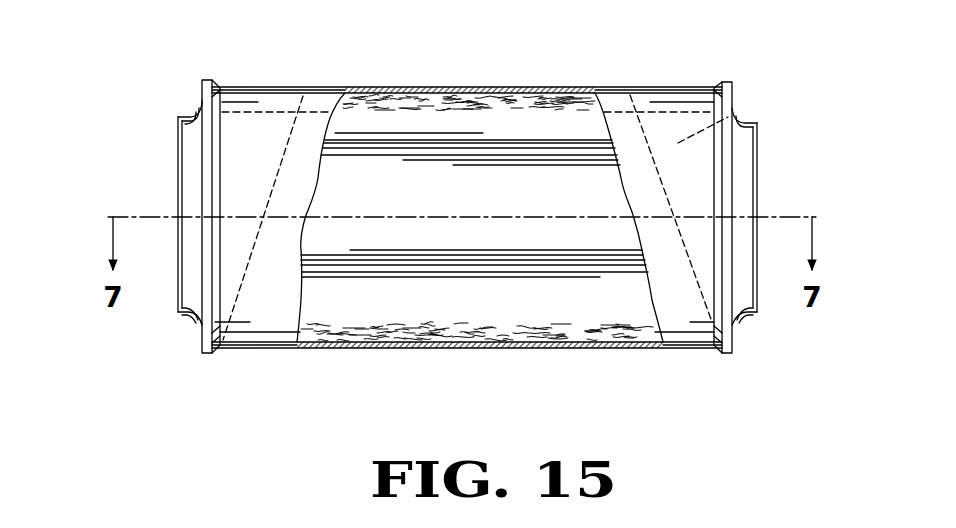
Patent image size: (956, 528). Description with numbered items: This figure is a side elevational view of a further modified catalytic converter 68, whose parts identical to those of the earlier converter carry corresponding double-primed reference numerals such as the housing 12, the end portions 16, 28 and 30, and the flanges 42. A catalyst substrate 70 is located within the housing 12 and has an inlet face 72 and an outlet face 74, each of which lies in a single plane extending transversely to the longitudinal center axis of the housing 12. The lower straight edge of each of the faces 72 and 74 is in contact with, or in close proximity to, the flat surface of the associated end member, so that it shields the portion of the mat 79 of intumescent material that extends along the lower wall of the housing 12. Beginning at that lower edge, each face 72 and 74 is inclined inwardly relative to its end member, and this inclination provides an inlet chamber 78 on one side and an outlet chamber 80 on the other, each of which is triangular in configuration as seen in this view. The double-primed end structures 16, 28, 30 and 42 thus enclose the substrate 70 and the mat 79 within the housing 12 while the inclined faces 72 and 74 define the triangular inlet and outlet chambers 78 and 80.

The housing 12 is at (295, 75).
The inlet end collar 16 is at (190, 217).
The inlet end lip 28 is at (198, 325).
The outlet end lip 30 is at (742, 322).
The flange 42 is at (218, 78).
The catalytic converter 68 is at (508, 74).
The catalyst substrate 70 is at (496, 207).
The inlet face 72 is at (278, 171).
The outlet face 74 is at (668, 179).
The inlet chamber 78 is at (260, 135).
The mat of intumescent material 79 is at (397, 338).
The outlet chamber 80 is at (740, 113).